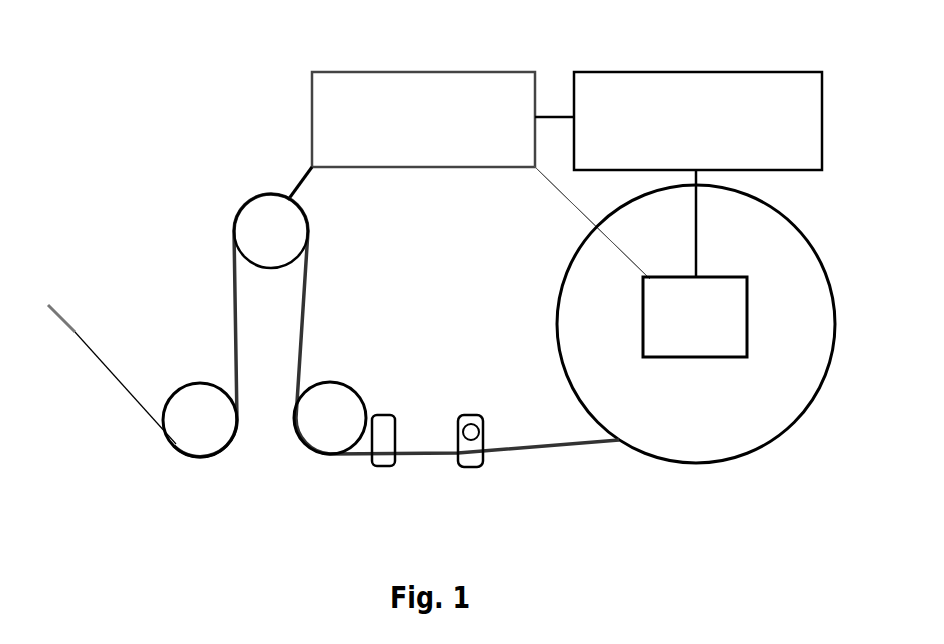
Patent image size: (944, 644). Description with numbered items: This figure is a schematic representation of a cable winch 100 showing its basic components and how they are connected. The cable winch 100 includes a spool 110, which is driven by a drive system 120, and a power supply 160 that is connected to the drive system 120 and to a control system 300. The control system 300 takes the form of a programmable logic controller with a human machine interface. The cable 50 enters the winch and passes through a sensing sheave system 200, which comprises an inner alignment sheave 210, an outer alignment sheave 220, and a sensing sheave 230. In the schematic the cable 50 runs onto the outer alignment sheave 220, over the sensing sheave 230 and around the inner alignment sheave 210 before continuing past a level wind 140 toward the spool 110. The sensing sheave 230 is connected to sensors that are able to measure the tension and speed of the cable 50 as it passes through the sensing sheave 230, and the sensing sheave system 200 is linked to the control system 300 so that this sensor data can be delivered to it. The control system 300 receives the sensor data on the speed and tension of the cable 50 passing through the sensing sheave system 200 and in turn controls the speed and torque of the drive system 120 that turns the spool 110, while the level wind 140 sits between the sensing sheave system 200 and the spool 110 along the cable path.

The cable winch 100 is at (128, 70).
The control system 300 is at (343, 92).
The power supply 160 is at (730, 92).
The spool 110 is at (753, 425).
The drive system 120 is at (712, 303).
The sensing sheave system 200 is at (211, 230).
The sensing sheave 230 is at (282, 230).
The outer alignment sheave 220 is at (192, 425).
The inner alignment sheave 210 is at (322, 425).
The cable 50 is at (95, 353).
The level wind 140 is at (478, 437).